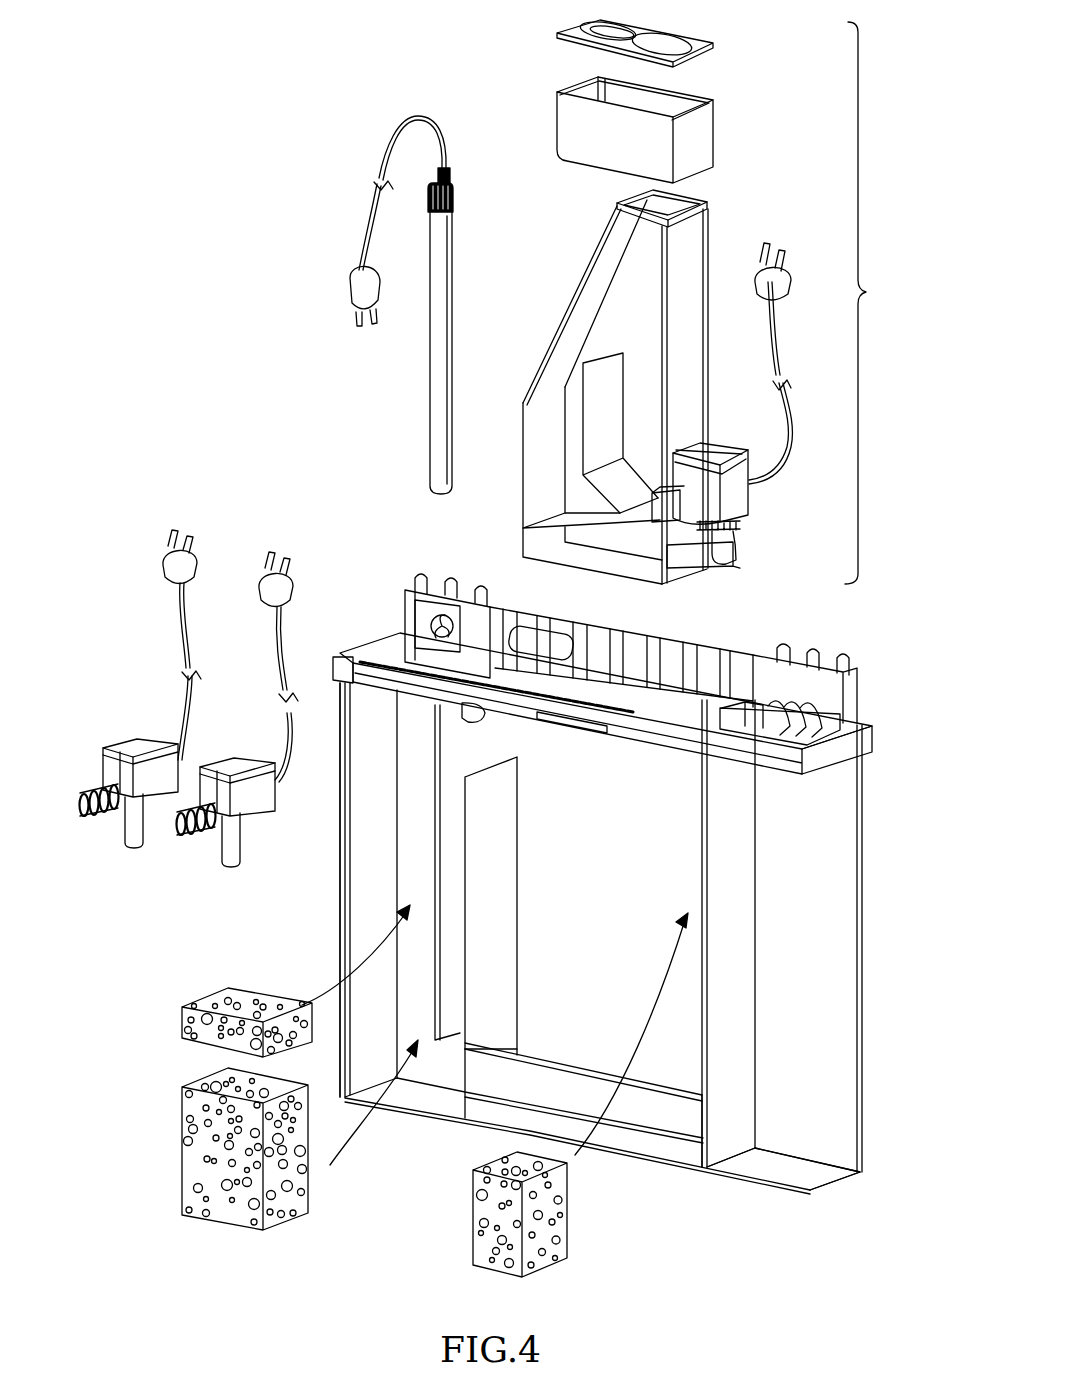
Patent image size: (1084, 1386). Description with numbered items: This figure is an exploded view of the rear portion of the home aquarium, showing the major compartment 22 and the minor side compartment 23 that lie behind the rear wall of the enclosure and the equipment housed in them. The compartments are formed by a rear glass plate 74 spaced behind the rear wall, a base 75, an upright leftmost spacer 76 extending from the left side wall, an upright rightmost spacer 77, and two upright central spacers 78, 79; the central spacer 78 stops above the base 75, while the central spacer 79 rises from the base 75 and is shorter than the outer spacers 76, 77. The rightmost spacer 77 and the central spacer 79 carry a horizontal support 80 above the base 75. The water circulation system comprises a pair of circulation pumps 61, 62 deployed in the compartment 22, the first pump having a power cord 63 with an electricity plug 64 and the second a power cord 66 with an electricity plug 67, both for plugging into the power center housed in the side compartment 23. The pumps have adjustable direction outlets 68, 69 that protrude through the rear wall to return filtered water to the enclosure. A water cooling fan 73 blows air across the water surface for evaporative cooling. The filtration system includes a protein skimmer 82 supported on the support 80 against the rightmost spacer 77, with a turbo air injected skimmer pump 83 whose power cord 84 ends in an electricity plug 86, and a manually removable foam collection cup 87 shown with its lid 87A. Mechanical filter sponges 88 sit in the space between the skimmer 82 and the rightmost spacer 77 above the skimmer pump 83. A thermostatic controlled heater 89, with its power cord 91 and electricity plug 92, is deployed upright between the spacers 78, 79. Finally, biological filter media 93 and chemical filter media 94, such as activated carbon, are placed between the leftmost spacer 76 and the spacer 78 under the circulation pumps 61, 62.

The major compartment 22 is at (600, 950).
The minor side compartment 23 is at (812, 897).
The circulation pump 61 is at (142, 740).
The circulation pump 62 is at (240, 760).
The power cord 63 is at (180, 634).
The electricity plug 64 is at (163, 552).
The power cord 66 is at (278, 647).
The electricity plug 67 is at (292, 580).
The adjustable direction outlet 68 is at (82, 814).
The adjustable direction outlet 69 is at (178, 836).
The water cooling fan 73 is at (452, 595).
The rear glass plate 74 is at (645, 775).
The base 75 is at (678, 1143).
The upright leftmost spacer 76 is at (362, 880).
The upright rightmost spacer 77 is at (727, 1148).
The upright central spacer 78 is at (437, 1047).
The upright central spacer 79 is at (478, 1092).
The horizontal support 80 is at (644, 1103).
The protein skimmer 82 is at (713, 303).
The turbo air injected skimmer pump 83 is at (735, 506).
The power cord 84 is at (783, 348).
The electricity plug 86 is at (790, 283).
The foam collection cup 87 is at (713, 123).
The filter box lid 87A is at (652, 35).
The mechanical filter sponges 88 is at (478, 1240).
The thermostatic controlled heater 89 is at (448, 290).
The power cord 91 is at (390, 152).
The electricity plug 92 is at (358, 290).
The biological filter media 93 is at (185, 1143).
The chemical filter media 94 is at (183, 1018).